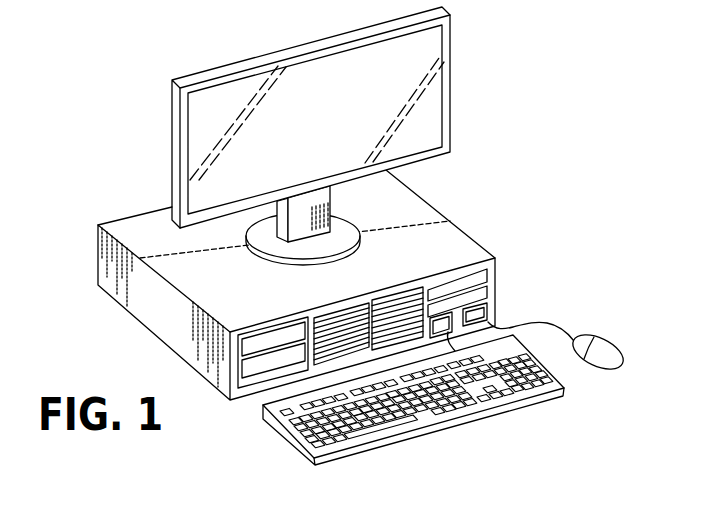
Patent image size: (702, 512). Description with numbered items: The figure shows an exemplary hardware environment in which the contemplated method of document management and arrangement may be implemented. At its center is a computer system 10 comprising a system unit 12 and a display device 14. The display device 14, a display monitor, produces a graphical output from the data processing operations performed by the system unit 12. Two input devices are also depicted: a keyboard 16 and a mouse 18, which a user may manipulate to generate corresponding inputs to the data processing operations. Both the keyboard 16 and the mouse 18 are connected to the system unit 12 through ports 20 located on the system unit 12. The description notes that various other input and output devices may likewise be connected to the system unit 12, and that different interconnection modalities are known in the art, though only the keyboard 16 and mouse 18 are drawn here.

The computer system 10 is at (89, 113).
The system unit 12 is at (253, 297).
The display device 14 is at (328, 127).
The keyboard 16 is at (515, 403).
The mouse 18 is at (607, 351).
The ports 20 is at (465, 310).